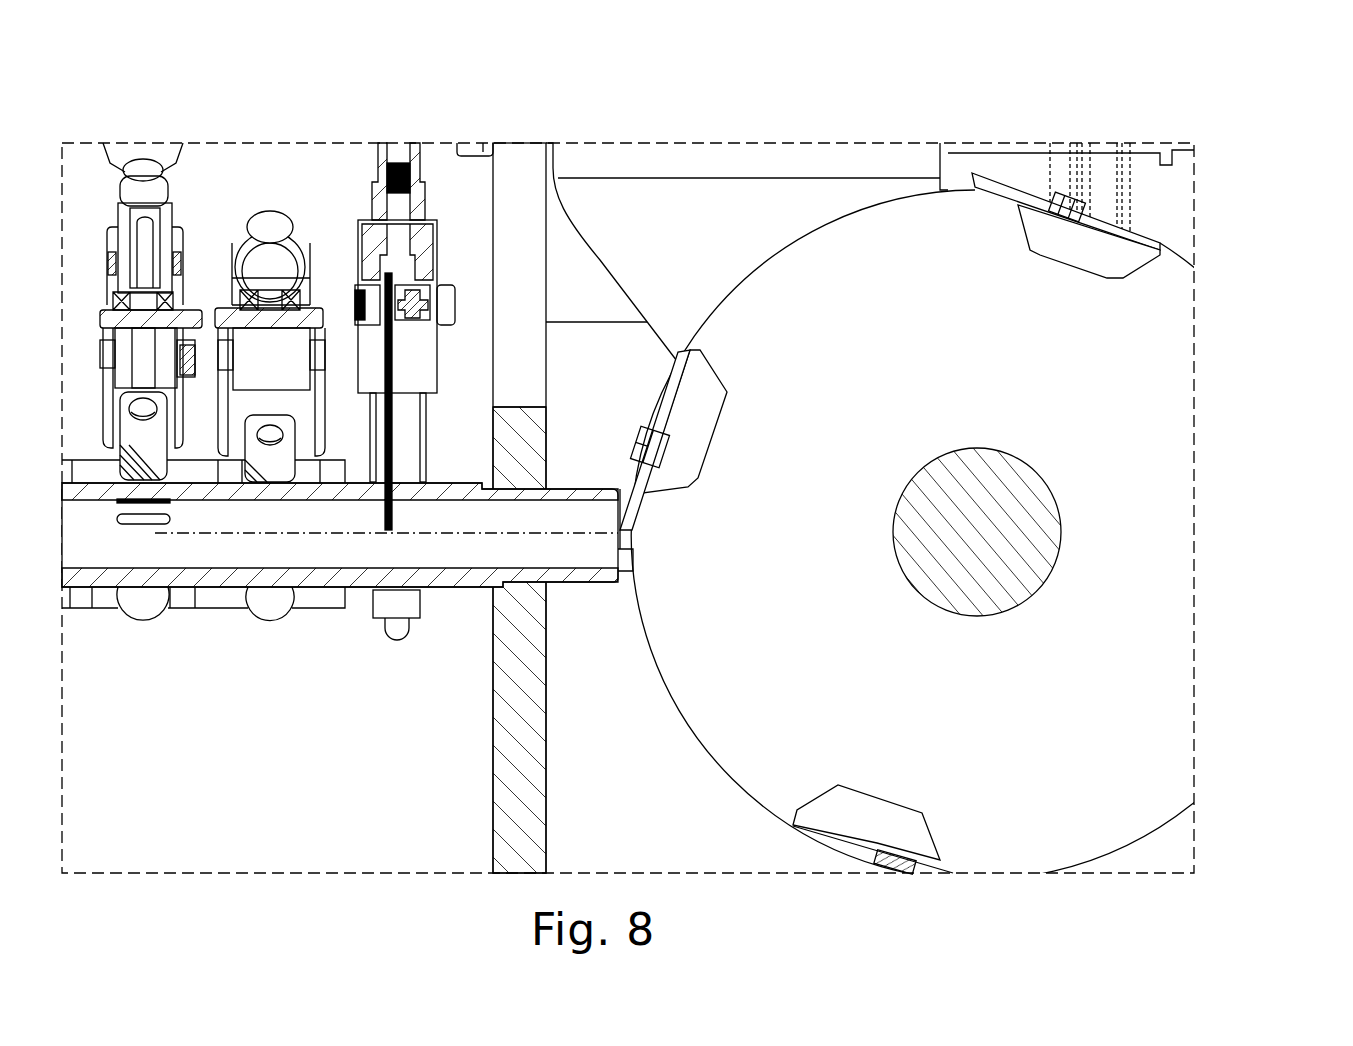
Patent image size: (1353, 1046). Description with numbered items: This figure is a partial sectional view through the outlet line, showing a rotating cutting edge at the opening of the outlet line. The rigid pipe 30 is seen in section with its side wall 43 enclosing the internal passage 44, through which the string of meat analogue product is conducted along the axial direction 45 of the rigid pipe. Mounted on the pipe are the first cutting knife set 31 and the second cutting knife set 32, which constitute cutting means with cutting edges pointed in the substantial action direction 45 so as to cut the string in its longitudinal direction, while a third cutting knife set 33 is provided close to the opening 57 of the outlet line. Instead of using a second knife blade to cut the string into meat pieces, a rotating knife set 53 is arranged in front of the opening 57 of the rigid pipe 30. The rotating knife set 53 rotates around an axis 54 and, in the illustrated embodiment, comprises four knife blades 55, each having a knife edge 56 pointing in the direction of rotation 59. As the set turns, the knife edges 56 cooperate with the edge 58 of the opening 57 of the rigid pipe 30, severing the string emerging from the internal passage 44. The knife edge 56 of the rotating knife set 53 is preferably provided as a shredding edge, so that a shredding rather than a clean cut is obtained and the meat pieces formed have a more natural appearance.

The rigid pipe 30 is at (461, 594).
The first cutting knife set 31 is at (292, 203).
The second cutting knife set 32 is at (185, 198).
The third cutting knife set 33 is at (432, 144).
The side wall 43 is at (350, 582).
The internal passage 44 is at (360, 547).
The axial direction of rigid pipe 45 is at (243, 540).
The rotating knife set 53 is at (930, 216).
The axis for rotating knife set 54 is at (979, 542).
The knife blade of rotating knife set 55 is at (1030, 202).
The knife edge of rotating knife set 56 is at (976, 178).
The opening of outlet line 57 is at (660, 530).
The edge of opening 58 is at (632, 575).
The direction of rotation 59 is at (1214, 205).